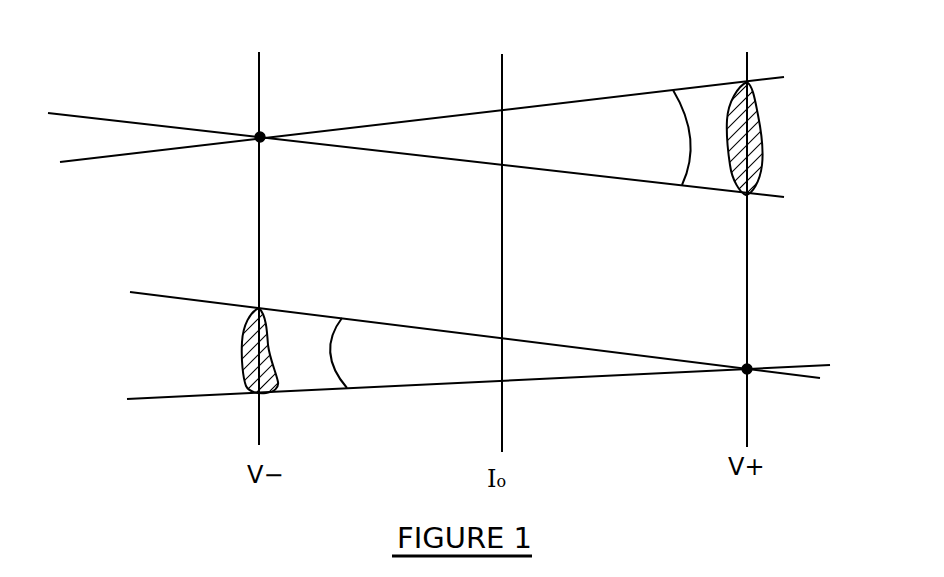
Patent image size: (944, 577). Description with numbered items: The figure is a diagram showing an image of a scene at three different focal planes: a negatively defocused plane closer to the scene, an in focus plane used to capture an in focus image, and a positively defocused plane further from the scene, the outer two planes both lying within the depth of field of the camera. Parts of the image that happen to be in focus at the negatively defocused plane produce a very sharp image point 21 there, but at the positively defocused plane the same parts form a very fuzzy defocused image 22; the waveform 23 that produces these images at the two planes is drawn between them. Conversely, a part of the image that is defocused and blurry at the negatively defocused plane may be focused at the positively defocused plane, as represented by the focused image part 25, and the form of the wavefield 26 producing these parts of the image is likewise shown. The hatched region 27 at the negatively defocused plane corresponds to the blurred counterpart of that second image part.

The sharp image point 21 is at (260, 137).
The fuzzy defocused image 22 is at (760, 123).
The waveform 23 is at (688, 117).
The focused image part 25 is at (747, 372).
The wavefield form 26 is at (330, 355).
The hatched region at V- 27 is at (240, 377).